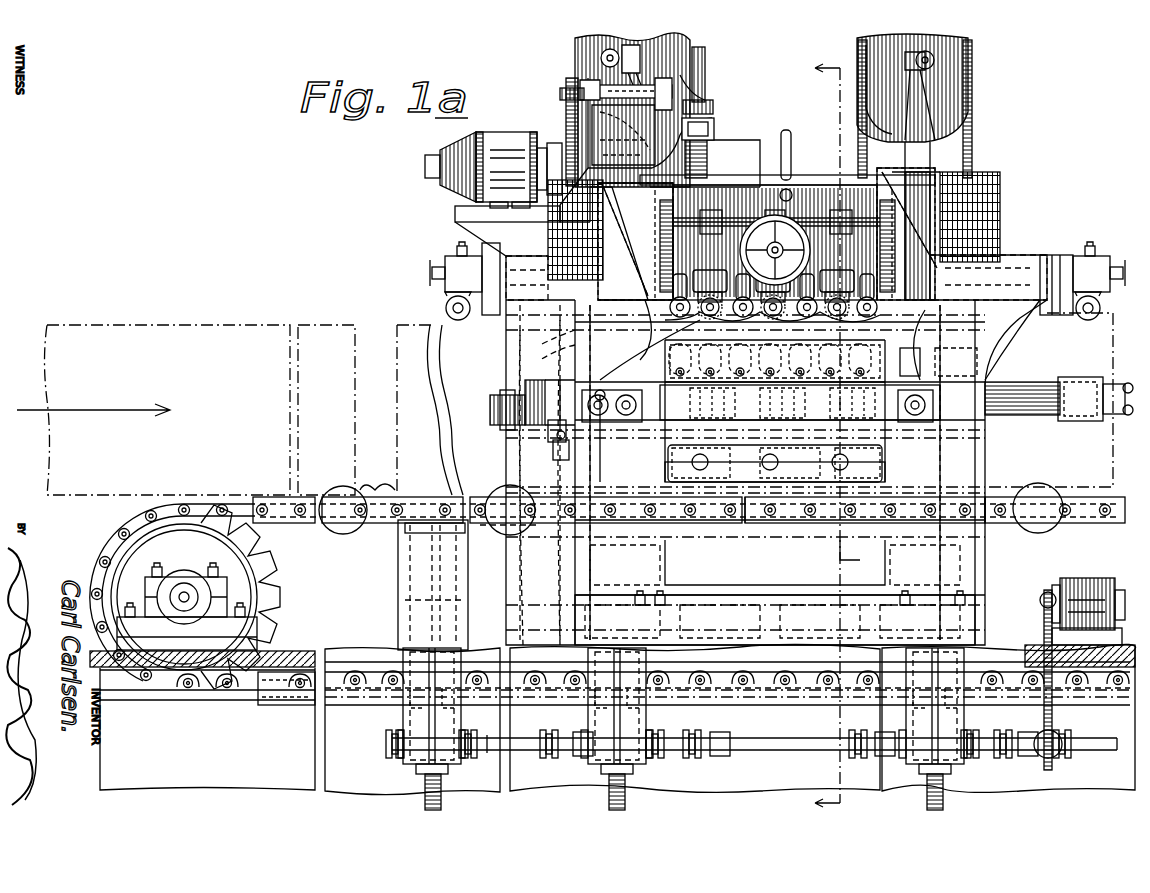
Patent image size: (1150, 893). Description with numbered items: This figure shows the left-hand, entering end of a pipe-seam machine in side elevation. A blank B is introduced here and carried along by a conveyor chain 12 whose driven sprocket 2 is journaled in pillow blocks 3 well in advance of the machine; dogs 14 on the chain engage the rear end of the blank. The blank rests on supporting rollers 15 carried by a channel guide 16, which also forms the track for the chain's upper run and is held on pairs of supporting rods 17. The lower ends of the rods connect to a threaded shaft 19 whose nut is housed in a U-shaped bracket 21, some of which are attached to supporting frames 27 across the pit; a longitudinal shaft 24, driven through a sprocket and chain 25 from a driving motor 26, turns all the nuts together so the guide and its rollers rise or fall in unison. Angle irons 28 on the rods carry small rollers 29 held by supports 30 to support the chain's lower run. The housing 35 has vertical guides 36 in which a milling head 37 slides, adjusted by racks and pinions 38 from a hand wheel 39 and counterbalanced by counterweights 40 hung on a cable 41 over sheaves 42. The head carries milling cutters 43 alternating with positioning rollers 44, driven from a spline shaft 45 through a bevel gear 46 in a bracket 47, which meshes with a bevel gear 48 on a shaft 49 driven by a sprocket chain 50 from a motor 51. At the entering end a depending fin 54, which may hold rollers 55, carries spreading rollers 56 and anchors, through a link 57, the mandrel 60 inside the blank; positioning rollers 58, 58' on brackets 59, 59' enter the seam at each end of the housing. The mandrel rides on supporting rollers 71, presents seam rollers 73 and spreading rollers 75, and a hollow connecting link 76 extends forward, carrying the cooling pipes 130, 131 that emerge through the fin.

The driven sprocket 2 is at (486, 431).
The pillow blocks 3 is at (232, 632).
The chain 12 is at (112, 540).
The dogs 14 is at (378, 492).
The rollers 15 is at (515, 533).
The channel guide 16 is at (550, 515).
The supporting rods 17 is at (412, 533).
The threaded shaft 19 is at (425, 785).
The U-shaped bracket 21 is at (418, 720).
The shaft 24 is at (775, 752).
The sprocket and chain 25 is at (1053, 706).
The driving motor 26 is at (1086, 578).
The supporting frames 27 is at (470, 592).
The angle irons 28 is at (774, 697).
The small rollers 29 is at (120, 515).
The supports 30 is at (738, 716).
The housing 35 is at (980, 560).
The guides 36 is at (757, 241).
The milling head 37 is at (775, 240).
The racks and pinions 38 is at (682, 232).
The hand wheel 39 is at (812, 222).
The counterweights 40 is at (548, 215).
The cable 41 is at (566, 118).
The sheaves 42 is at (585, 52).
The milling cutters 43 is at (690, 355).
The positioning rollers 44 is at (820, 340).
The spline shaft 45 is at (700, 88).
The bevel gear 46 is at (713, 106).
The bracket 47 is at (714, 128).
The bevel gear 48 is at (710, 66).
The shaft 49 is at (645, 100).
The sprocket chain 50 is at (558, 96).
The motor 51 is at (500, 132).
The fin 54 is at (575, 346).
The rollers 55 is at (580, 352).
The spreading rollers 56 is at (500, 425).
The link 57 is at (610, 425).
The positioning roller 58 is at (434, 306).
The positioning roller 58' is at (1105, 306).
The bracket 59 is at (443, 261).
The bracket 59' is at (1083, 266).
The mandrel 60 is at (940, 368).
The supporting rollers 71 is at (665, 478).
The rollers 73 is at (912, 362).
The spreading rollers 75 is at (885, 452).
The connecting link 76 is at (1030, 384).
The pipe 130 is at (560, 455).
The pipe 131 is at (548, 432).
The blank B is at (245, 330).